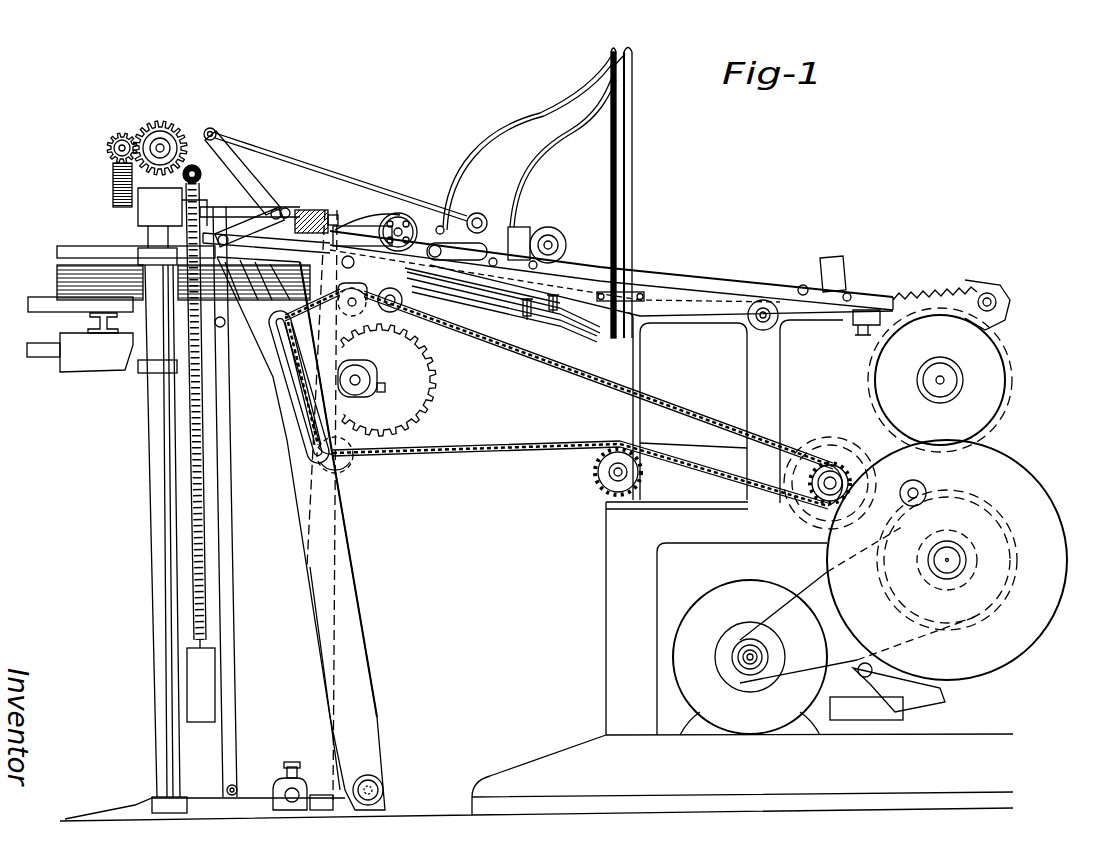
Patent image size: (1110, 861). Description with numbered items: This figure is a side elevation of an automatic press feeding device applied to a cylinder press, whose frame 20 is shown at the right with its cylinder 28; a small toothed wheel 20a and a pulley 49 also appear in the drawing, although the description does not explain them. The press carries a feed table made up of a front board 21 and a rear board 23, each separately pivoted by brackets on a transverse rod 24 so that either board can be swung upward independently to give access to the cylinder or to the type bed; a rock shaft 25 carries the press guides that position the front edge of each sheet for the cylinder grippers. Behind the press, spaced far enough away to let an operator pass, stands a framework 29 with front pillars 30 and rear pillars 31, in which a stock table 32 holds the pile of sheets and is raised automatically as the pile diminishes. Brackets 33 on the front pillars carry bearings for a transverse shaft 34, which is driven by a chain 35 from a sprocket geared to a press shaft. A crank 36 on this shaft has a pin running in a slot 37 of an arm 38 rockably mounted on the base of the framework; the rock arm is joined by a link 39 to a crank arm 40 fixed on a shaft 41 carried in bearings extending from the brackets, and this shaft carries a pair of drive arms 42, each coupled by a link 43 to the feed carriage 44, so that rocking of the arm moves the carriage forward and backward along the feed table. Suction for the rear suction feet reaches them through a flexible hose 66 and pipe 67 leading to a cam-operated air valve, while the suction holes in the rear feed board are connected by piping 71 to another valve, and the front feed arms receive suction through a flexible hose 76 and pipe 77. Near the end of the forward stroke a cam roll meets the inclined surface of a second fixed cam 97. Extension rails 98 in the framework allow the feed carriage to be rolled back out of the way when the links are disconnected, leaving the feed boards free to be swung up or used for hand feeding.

The frame 20 is at (618, 552).
The drive sprocket 20a is at (830, 477).
The front board 21 is at (750, 290).
The rear board 23 is at (660, 283).
The rod 24 is at (763, 320).
The rock shaft 25 is at (997, 302).
The cylinder 28 is at (1012, 360).
The framework 29 is at (250, 803).
The front pillars 30 is at (320, 656).
The rear pillars 31 is at (167, 680).
The stock table 32 is at (75, 300).
The brackets 33 is at (347, 467).
The transverse shaft 34 is at (363, 380).
The chain 35 is at (470, 450).
The crank 36 is at (337, 393).
The slot 37 is at (293, 413).
The arm 38 is at (350, 612).
The link 39 is at (247, 223).
The crank arm 40 is at (297, 213).
The shaft 41 is at (402, 302).
The drive arms 42 is at (253, 180).
The link 43 is at (313, 172).
The feed carriage 44 is at (495, 237).
The pulley 49 is at (390, 222).
The flexible hose 66 is at (513, 130).
The pipe 67 is at (540, 323).
The piping 71 is at (462, 290).
The flexible hose 76 is at (543, 153).
The pipe 77 is at (577, 333).
The second fixed cam 97 is at (840, 260).
The extension rails 98 is at (57, 251).